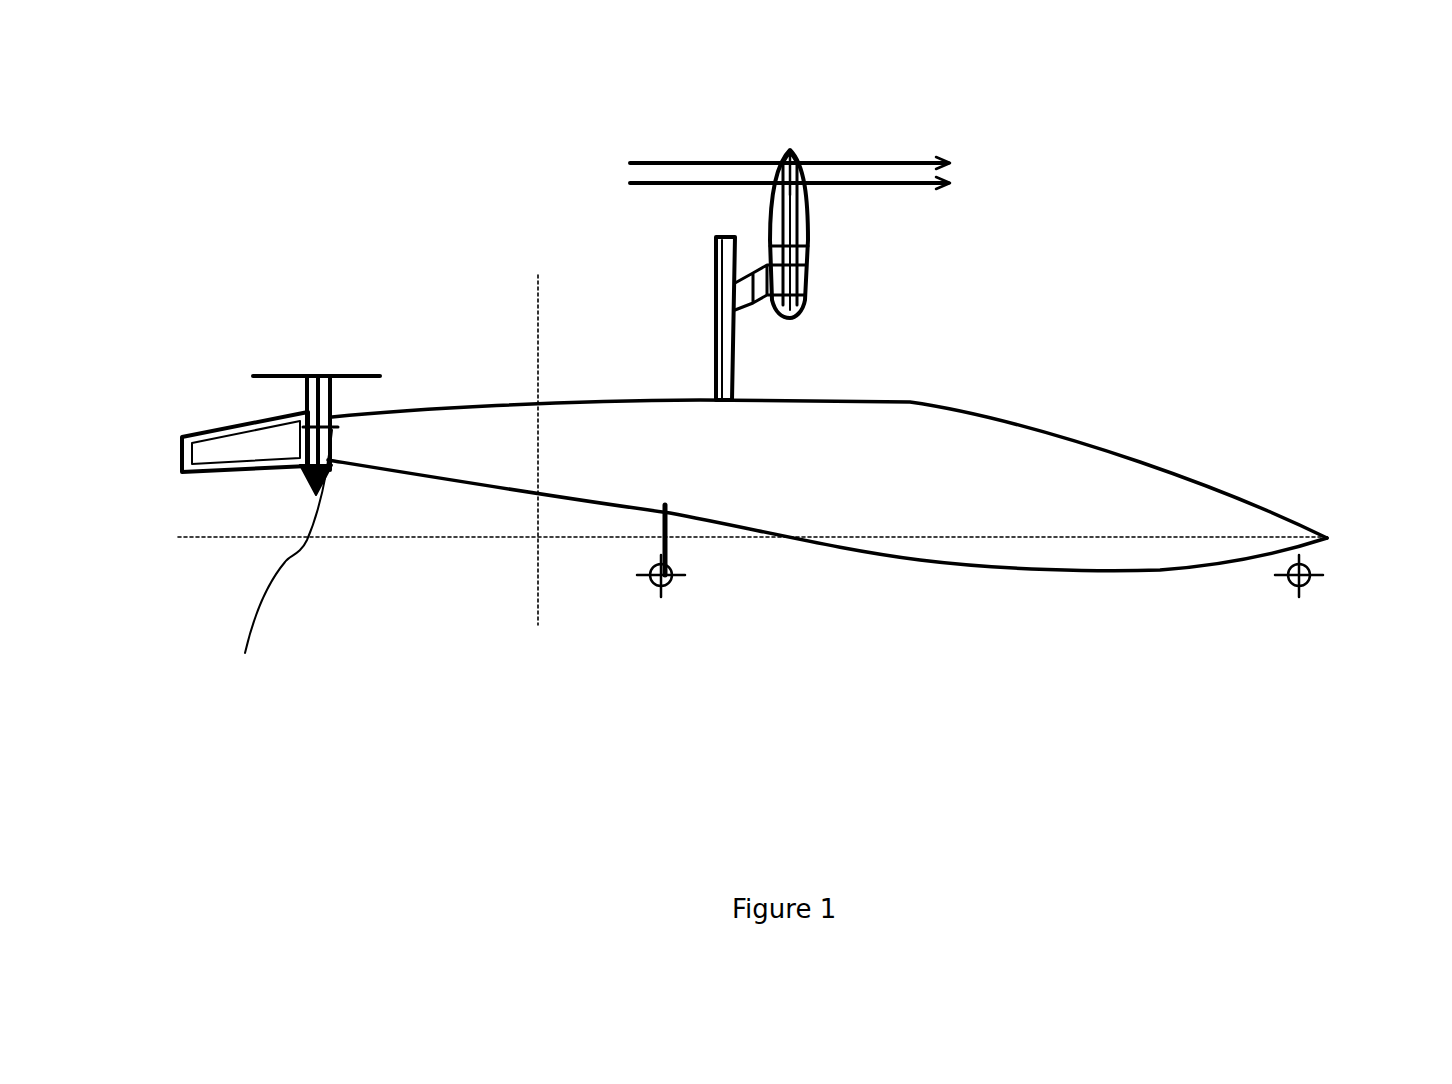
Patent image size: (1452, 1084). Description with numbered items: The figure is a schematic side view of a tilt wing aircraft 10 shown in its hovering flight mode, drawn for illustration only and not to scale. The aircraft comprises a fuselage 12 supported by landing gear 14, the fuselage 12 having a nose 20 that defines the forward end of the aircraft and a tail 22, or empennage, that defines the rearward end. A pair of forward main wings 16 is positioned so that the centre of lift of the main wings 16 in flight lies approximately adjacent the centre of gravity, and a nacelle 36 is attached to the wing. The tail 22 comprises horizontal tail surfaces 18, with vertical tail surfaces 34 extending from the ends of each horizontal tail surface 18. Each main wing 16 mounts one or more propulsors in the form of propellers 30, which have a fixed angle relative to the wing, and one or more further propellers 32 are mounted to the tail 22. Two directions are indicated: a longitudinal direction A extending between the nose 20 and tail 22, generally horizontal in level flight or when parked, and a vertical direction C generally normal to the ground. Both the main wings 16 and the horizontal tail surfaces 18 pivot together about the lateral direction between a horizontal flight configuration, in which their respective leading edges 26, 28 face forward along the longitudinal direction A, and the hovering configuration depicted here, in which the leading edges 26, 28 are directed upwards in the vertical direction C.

The aircraft 10 is at (410, 145).
The fuselage 12 is at (1083, 440).
The landing gear 14 is at (670, 582).
The forward main wing 16 is at (718, 345).
The horizontal tail surface 18 is at (281, 565).
The nose 20 is at (1327, 537).
The tail 22 is at (231, 400).
The leading edge of main wing 26 is at (776, 275).
The leading edge of horizontal tail surface 28 is at (315, 375).
The propeller 30 is at (920, 190).
The propeller 32 is at (355, 372).
The vertical tail surface 34 is at (182, 472).
The nacelle 36 is at (808, 265).
The longitudinal direction A is at (1005, 540).
The vertical direction C is at (538, 598).